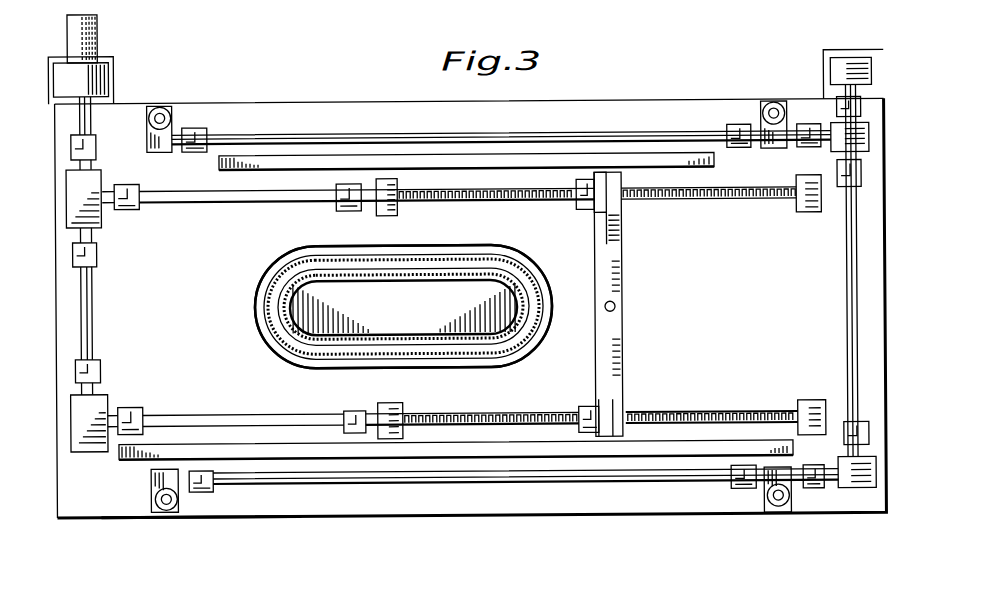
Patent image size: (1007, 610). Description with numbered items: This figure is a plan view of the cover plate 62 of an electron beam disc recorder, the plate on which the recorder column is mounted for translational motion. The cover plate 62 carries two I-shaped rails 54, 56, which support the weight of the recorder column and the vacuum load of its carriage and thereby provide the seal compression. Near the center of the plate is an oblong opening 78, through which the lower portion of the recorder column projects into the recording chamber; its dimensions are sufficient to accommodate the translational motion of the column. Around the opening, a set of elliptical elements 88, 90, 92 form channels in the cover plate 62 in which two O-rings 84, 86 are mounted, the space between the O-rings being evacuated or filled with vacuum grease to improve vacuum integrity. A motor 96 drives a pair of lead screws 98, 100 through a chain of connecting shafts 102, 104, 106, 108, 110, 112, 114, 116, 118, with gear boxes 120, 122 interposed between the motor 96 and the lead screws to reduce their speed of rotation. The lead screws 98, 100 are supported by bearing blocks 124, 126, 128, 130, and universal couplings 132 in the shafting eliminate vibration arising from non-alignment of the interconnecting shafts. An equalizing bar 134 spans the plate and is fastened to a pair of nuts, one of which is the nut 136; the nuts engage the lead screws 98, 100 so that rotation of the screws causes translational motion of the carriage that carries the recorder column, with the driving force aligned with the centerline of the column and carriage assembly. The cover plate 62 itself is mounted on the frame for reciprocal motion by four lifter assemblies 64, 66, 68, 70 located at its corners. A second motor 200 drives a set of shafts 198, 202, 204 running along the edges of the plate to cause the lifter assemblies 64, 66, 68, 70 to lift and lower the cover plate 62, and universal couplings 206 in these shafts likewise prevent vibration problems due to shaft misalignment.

The I-shaped rail 54 is at (135, 460).
The I-shaped rail 56 is at (220, 165).
The cover plate 62 is at (288, 101).
The lifter assembly 64 is at (140, 515).
The lifter assembly 66 is at (765, 510).
The lifter assembly 68 is at (772, 104).
The lifter assembly 70 is at (163, 104).
The oblong opening 78 is at (297, 288).
The O-ring 84 is at (494, 245).
The O-ring 86 is at (497, 282).
The elliptical element 88 is at (533, 260).
The elliptical element 90 is at (540, 275).
The elliptical element 92 is at (546, 300).
The motor 96 is at (96, 33).
The lead screw 98 is at (490, 413).
The lead screw 100 is at (517, 200).
The connecting shaft 102 is at (80, 123).
The connecting shaft 104 is at (98, 160).
The connecting shaft 106 is at (80, 236).
The connecting shaft 108 is at (80, 322).
The connecting shaft 110 is at (80, 391).
The connecting shaft 112 is at (128, 405).
The connecting shaft 114 is at (210, 378).
The connecting shaft 116 is at (117, 209).
The connecting shaft 118 is at (218, 202).
The gear box 120 is at (97, 450).
The gear box 122 is at (67, 194).
The bearing block 124 is at (402, 402).
The bearing block 126 is at (812, 402).
The bearing block 128 is at (810, 214).
The bearing block 130 is at (398, 212).
The universal coupling 132 is at (96, 155).
The equalizing bar 134 is at (622, 335).
The nut 136 is at (585, 407).
The shaft 198 is at (330, 483).
The motor 200 is at (875, 72).
The shaft 202 is at (847, 308).
The shaft 204 is at (486, 133).
The universal coupling 206 is at (208, 130).